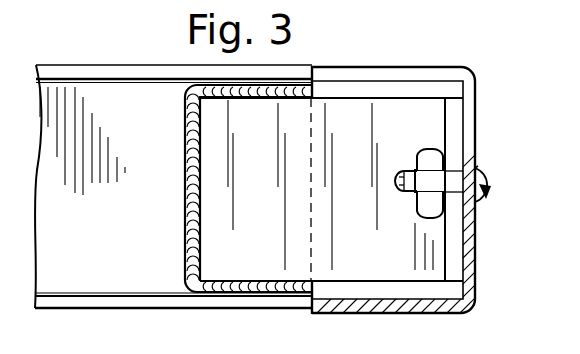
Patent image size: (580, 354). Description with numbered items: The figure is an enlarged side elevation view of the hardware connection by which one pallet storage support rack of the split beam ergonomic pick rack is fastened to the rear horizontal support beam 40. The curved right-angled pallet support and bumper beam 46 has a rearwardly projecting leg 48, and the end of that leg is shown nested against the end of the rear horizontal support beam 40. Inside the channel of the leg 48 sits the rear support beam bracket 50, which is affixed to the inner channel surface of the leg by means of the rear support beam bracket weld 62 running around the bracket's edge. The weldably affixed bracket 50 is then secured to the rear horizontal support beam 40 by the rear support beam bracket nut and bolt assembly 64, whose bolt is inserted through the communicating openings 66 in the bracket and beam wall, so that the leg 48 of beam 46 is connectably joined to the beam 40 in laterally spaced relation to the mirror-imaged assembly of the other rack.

The rear horizontal support beam 40 is at (395, 67).
The curved right-angled pallet support and bumper beam 46 is at (77, 267).
The rearwardly projecting leg 48 is at (136, 310).
The rear support beam bracket 50 is at (455, 112).
The rear support beam bracket weld 62 is at (187, 221).
The rear support beam bracket nut and bolt assembly 64 is at (489, 166).
The communicating openings 66 is at (452, 170).